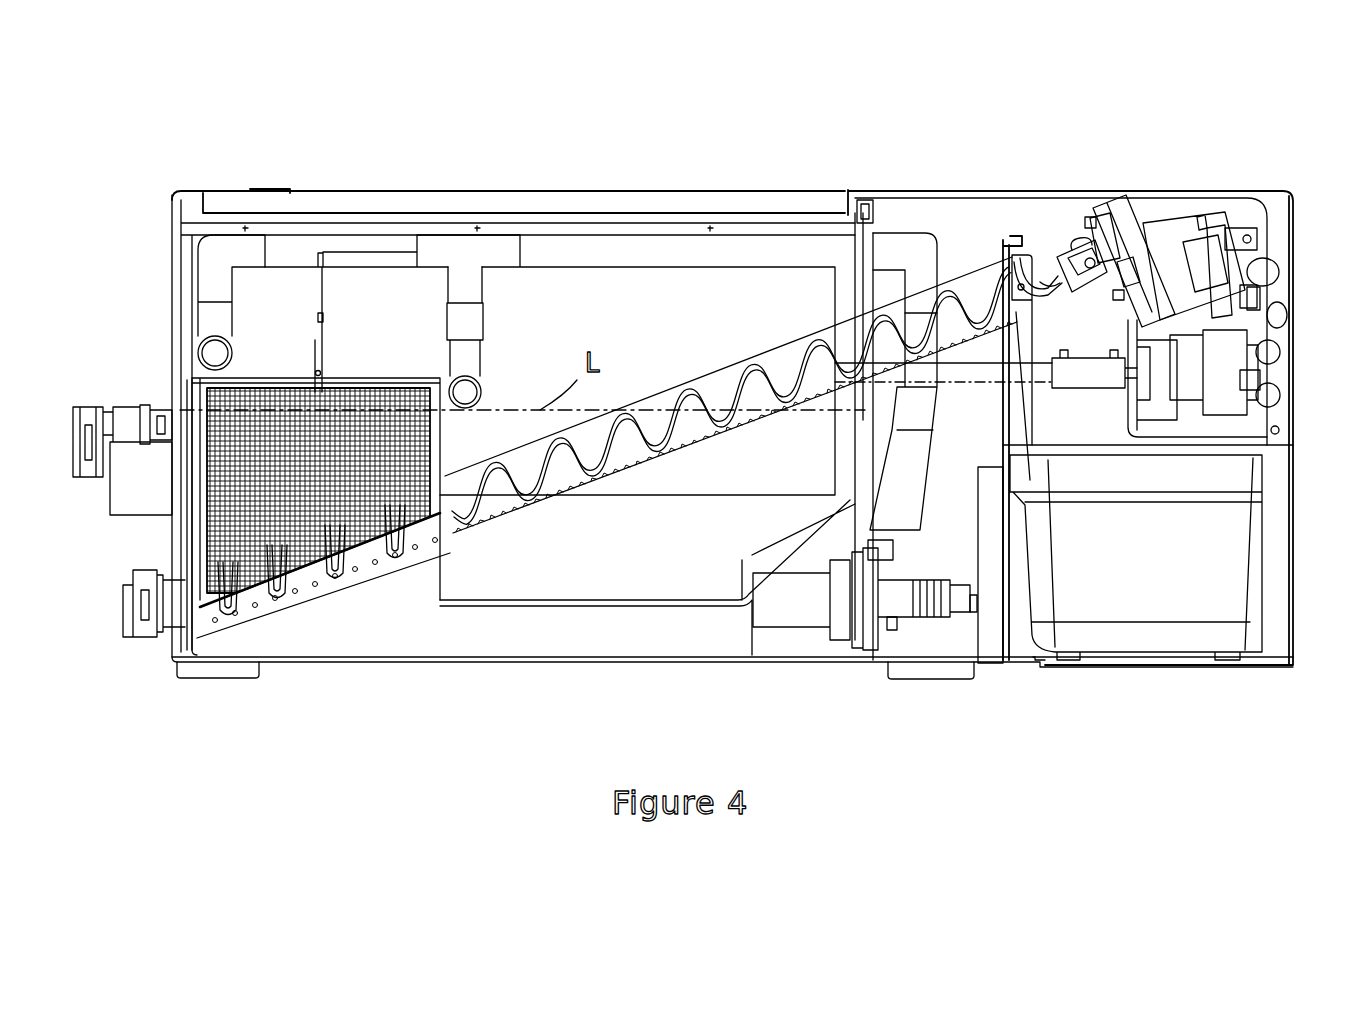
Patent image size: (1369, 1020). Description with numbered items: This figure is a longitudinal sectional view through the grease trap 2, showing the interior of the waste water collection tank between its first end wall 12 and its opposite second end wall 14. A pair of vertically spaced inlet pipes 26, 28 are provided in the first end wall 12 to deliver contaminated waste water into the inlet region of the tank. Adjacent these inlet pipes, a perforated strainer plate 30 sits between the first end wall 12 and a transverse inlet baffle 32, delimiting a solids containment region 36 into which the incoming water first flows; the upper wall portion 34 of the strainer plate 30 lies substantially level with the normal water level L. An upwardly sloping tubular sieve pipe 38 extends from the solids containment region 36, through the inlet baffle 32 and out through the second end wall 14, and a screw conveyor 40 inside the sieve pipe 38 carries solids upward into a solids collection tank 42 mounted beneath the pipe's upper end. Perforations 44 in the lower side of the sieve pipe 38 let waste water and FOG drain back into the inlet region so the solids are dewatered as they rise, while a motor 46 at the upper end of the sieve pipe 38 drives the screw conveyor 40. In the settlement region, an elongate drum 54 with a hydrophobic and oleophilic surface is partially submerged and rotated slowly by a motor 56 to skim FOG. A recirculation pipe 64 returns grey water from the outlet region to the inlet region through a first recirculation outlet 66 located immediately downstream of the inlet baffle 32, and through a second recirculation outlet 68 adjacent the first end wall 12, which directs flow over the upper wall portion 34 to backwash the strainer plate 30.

The grease trap 2 is at (907, 82).
The first end wall 12 is at (178, 540).
The second end wall 14 is at (868, 218).
The inlet pipe 26 is at (104, 415).
The inlet pipe 28 is at (125, 615).
The perforated strainer plate 30 is at (215, 447).
The transverse inlet baffle 32 is at (440, 558).
The upper wall portion 34 is at (345, 388).
The solids containment region 36 is at (268, 565).
The tubular sieve pipe 38 is at (720, 372).
The screw conveyor 40 is at (520, 479).
The solids collection tank 42 is at (1130, 620).
The perforations 44 is at (581, 489).
The motor 46 is at (1123, 230).
The elongate drum 54 is at (625, 295).
The motor 56 is at (1230, 370).
The recirculation pipe 64 is at (905, 615).
The first recirculation outlet 66 is at (470, 393).
The second recirculation outlet 68 is at (205, 355).